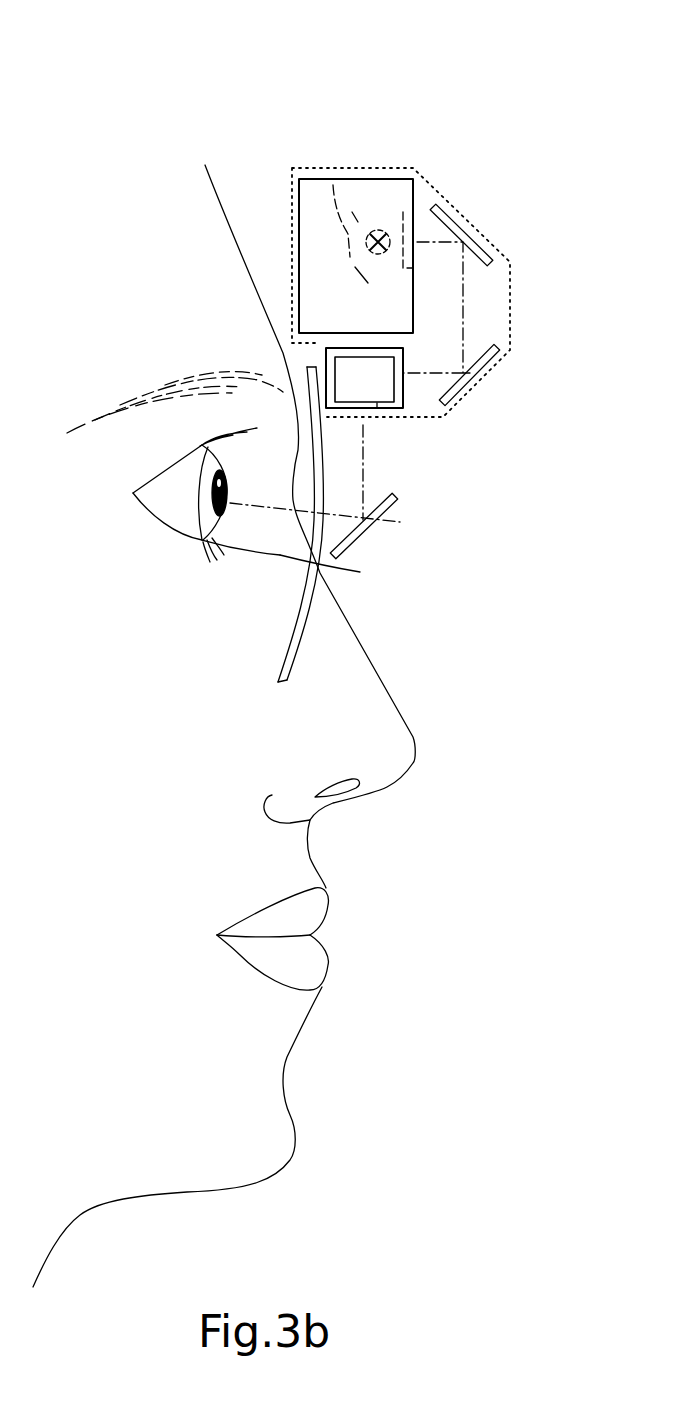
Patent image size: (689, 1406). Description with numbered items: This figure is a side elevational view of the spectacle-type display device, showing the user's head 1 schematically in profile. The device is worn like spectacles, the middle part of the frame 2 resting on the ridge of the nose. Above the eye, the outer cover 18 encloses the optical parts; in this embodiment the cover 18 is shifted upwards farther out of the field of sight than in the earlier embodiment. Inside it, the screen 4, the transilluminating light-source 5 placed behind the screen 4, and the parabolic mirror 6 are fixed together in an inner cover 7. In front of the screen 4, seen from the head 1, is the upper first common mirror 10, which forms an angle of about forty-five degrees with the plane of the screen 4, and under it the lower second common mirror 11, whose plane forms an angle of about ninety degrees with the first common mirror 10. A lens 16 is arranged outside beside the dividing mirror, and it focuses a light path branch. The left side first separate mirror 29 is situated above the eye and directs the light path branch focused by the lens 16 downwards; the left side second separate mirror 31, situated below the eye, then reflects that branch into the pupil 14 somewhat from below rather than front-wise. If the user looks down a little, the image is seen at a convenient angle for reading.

The head 1 is at (210, 178).
The frame 2 is at (295, 627).
The screen 4 is at (403, 212).
The light-source 5 is at (373, 228).
The parabolic mirror 6 is at (333, 185).
The inner cover 7 is at (305, 178).
The first common mirror 10 is at (448, 203).
The second common mirror 11 is at (487, 372).
The left pupil 14 is at (360, 572).
The lens 16 is at (405, 398).
The cover 18 is at (512, 290).
The left side first separate mirror 29 is at (377, 405).
The left side second separate mirror 31 is at (377, 522).